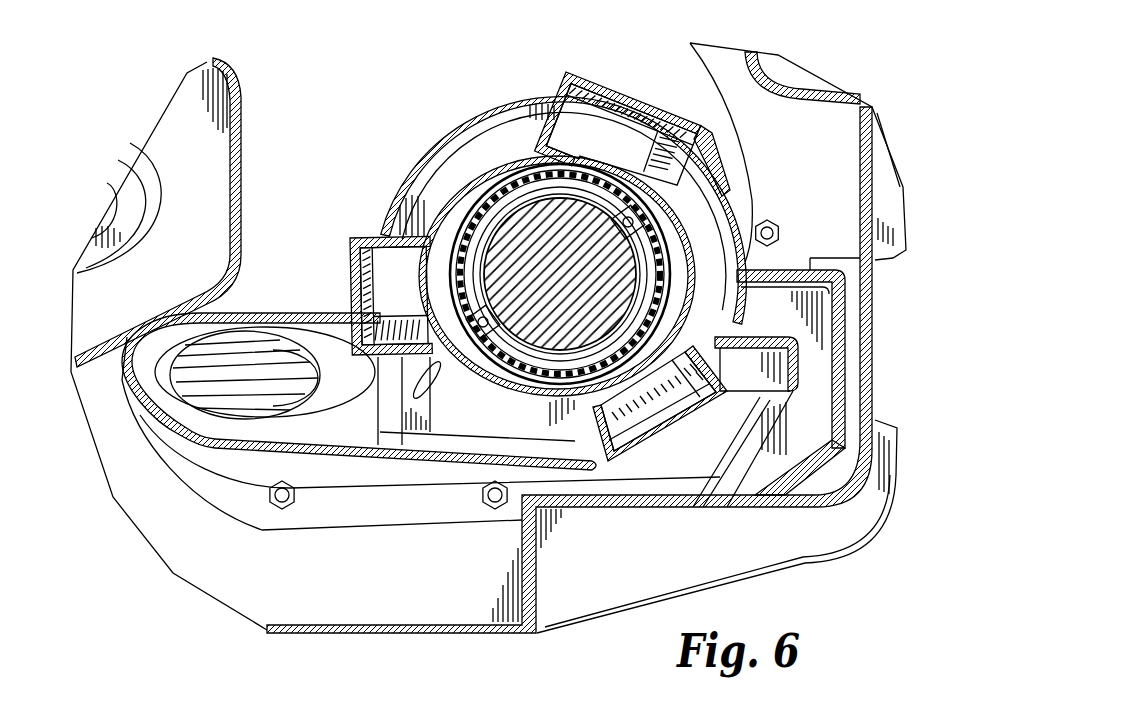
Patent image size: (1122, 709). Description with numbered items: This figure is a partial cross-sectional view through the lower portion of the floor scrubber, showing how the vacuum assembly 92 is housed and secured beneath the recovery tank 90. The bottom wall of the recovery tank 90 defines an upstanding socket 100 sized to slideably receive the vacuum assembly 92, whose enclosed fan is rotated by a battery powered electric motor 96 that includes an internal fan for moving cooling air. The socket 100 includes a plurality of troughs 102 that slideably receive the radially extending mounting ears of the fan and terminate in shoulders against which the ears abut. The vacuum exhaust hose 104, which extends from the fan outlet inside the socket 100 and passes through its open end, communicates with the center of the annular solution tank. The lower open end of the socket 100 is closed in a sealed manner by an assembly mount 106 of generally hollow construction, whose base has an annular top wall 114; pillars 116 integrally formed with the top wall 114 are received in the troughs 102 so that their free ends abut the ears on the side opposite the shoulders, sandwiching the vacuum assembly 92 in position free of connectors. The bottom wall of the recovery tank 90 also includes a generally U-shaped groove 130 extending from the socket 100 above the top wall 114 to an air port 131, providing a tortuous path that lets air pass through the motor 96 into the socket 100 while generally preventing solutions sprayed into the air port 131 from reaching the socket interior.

The recovery tank 90 is at (242, 92).
The vacuum assembly 92 is at (478, 224).
The electric motor 96 is at (488, 236).
The socket 100 is at (510, 93).
The troughs 102 is at (637, 80).
The vacuum exhaust hose 104 is at (335, 396).
The assembly mount 106 is at (496, 155).
The top wall 114 is at (525, 426).
The pillars 116 is at (587, 112).
The groove 130 is at (815, 360).
The air port 131 is at (737, 490).